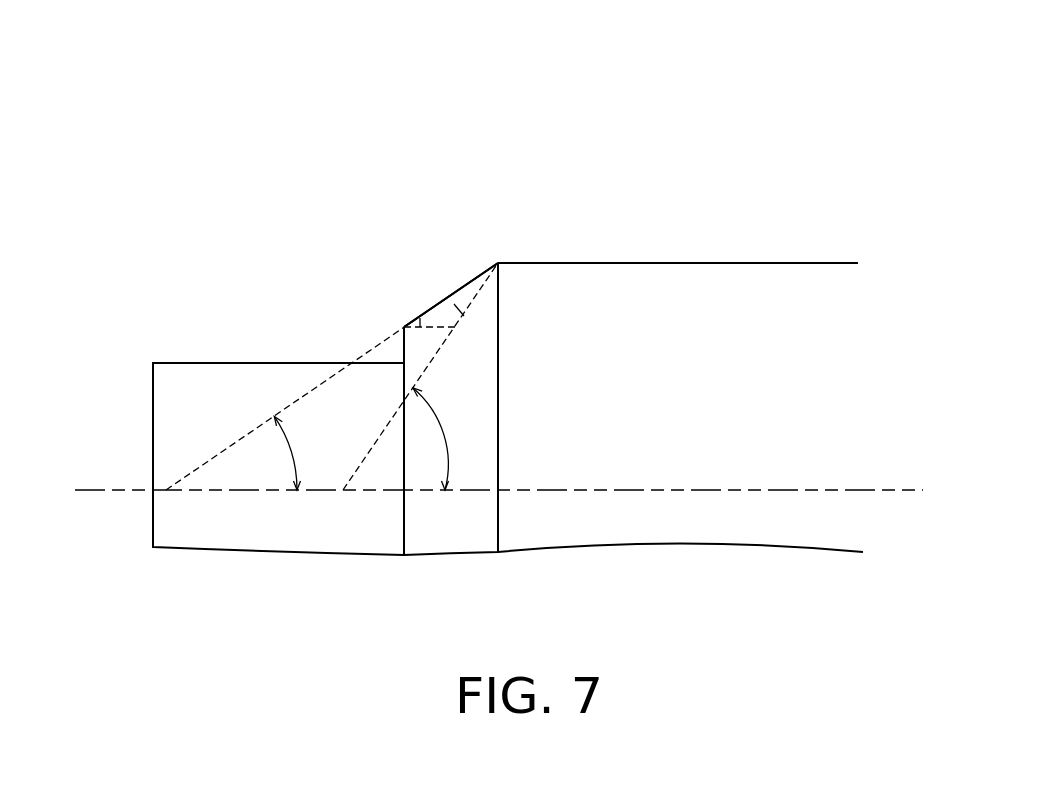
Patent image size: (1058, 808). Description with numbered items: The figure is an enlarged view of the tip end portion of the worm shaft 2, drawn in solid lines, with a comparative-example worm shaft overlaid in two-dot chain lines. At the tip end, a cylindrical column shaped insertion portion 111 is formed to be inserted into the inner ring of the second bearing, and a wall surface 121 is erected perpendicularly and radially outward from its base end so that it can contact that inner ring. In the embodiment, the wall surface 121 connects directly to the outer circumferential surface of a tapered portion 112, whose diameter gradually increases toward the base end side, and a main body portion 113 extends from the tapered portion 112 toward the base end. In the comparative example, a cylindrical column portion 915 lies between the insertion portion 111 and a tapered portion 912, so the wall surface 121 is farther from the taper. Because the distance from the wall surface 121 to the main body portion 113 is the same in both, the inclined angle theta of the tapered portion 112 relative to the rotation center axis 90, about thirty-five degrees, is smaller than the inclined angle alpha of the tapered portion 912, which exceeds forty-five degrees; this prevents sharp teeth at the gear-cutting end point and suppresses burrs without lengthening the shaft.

The worm shaft 2 is at (123, 143).
The rotation center axis 90 is at (858, 490).
The insertion portion 111 is at (192, 362).
The tapered portion 112 is at (471, 280).
The main body portion 113 is at (648, 262).
The wall surface 121 is at (403, 348).
The tapered portion 912 is at (450, 291).
The cylindrical column portion 915 is at (417, 314).